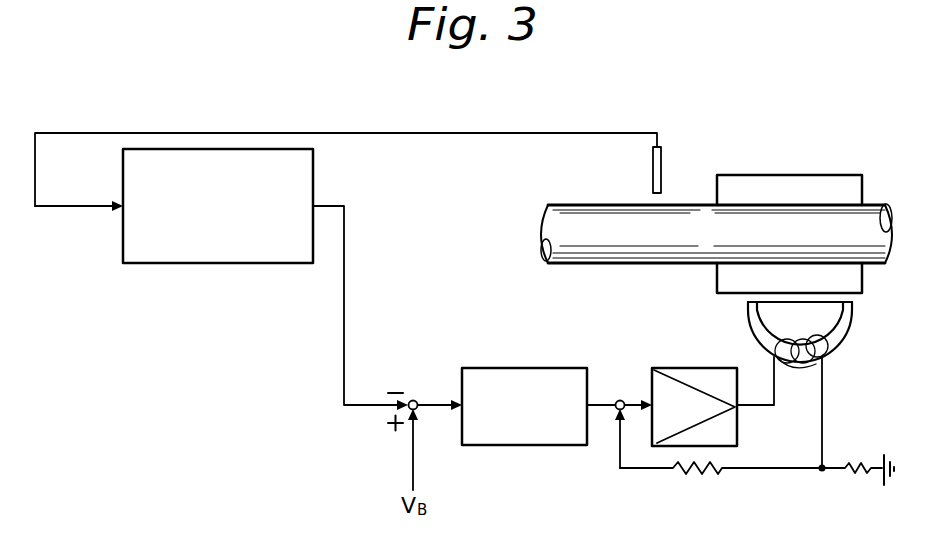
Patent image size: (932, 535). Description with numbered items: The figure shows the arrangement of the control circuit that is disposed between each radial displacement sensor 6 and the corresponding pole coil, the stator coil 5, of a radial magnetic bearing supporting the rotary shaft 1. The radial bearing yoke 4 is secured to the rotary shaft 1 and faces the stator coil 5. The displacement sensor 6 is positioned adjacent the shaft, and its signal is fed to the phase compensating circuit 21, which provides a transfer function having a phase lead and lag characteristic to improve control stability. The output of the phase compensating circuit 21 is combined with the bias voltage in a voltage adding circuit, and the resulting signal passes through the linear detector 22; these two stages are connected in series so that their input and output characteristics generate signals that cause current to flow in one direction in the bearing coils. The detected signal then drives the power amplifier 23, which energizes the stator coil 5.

The rotary shaft 1 is at (893, 225).
The radial bearing yoke 4 is at (862, 185).
The stator coil 5 is at (830, 340).
The radial displacement sensor 6 is at (661, 166).
The phase compensating circuit 21 is at (222, 263).
The linear detector 22 is at (527, 445).
The power amplifier 23 is at (690, 368).